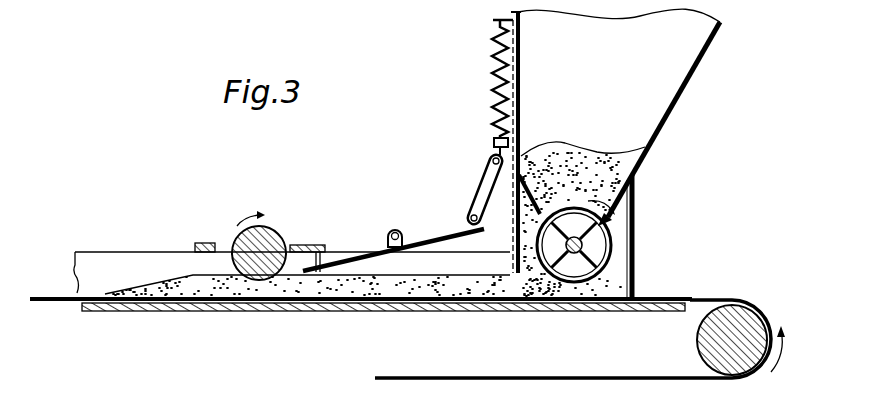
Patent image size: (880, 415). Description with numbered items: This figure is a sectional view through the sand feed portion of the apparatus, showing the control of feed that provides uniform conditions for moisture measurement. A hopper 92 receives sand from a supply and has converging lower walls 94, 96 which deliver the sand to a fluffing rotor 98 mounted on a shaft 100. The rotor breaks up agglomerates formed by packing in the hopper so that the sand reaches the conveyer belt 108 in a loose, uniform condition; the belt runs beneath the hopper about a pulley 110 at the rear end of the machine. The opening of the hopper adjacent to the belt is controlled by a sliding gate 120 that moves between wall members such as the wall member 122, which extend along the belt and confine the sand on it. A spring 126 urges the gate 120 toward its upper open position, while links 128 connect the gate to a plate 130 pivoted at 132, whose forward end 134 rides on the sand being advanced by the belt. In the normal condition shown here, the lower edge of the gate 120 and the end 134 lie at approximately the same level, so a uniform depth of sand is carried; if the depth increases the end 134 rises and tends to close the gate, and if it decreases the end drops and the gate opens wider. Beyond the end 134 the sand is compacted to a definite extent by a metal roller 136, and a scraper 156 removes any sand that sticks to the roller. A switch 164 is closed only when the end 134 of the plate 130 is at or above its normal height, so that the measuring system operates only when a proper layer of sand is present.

The hopper 92 is at (692, 72).
The converging lower wall 94 is at (540, 206).
The converging lower wall 96 is at (622, 207).
The fluffing rotor 98 is at (612, 245).
The shaft 100 is at (567, 256).
The conveyer belt 108 is at (698, 301).
The pulley 110 is at (729, 366).
The sliding gate 120 is at (511, 244).
The wall member 122 is at (352, 250).
The spring 126 is at (493, 45).
The link 128 is at (482, 186).
The plate 130 is at (424, 241).
The pivot 132 is at (395, 229).
The forward end of plate 134 is at (332, 273).
The metal roller 136 is at (270, 232).
The scraper 156 is at (205, 242).
The switch 164 is at (322, 238).